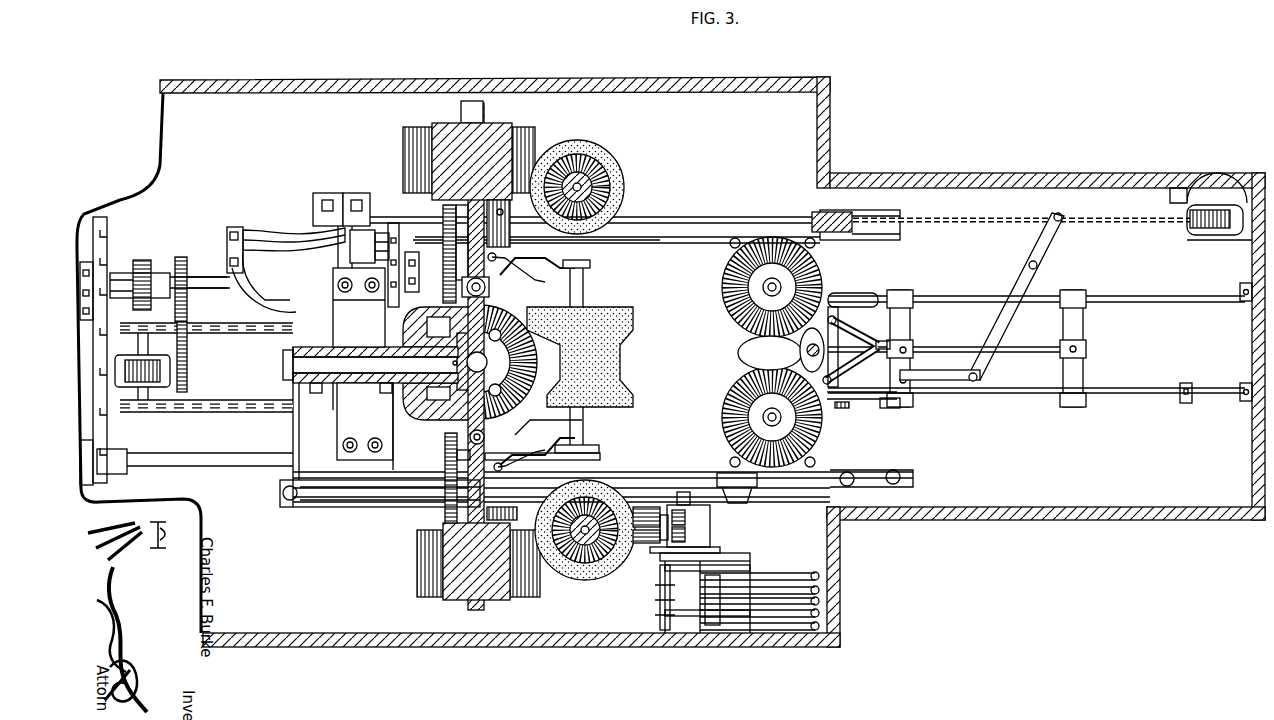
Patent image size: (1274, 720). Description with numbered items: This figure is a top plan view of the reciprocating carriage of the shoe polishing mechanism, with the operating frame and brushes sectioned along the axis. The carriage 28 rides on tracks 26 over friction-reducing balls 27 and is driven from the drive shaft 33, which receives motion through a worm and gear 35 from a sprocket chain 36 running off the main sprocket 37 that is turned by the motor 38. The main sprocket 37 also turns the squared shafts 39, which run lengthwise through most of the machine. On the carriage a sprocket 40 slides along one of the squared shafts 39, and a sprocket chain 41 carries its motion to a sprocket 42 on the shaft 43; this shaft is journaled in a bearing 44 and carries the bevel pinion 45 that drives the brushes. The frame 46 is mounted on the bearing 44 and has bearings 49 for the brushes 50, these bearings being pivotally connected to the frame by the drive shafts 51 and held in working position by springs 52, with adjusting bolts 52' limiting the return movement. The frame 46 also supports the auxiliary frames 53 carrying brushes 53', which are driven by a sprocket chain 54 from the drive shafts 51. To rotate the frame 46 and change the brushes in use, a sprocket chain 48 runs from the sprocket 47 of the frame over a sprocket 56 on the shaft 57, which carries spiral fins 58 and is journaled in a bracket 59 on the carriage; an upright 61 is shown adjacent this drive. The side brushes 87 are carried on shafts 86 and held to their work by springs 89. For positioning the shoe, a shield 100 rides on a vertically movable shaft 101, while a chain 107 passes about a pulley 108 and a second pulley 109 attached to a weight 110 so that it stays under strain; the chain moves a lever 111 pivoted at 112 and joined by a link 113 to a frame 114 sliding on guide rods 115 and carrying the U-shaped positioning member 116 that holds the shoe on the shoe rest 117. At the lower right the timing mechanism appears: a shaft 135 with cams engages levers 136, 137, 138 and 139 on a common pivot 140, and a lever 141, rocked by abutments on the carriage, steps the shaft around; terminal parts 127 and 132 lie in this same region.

The tracks 26 is at (700, 225).
The balls 27 is at (902, 478).
The carriage 28 is at (650, 238).
The drive shaft 33 is at (150, 415).
The gear 35 is at (128, 390).
The sprocket chain 36 is at (165, 268).
The main sprocket 37 is at (108, 243).
The motor 38 is at (232, 340).
The squared shafts 39 is at (208, 275).
The sprocket 40 is at (310, 282).
The sprocket chain 41 is at (338, 323).
The sprocket 42 is at (322, 393).
The shaft 43 is at (355, 353).
The bearing 44 is at (417, 293).
The bevel pinion 45 is at (492, 338).
The frame 46 is at (428, 412).
The sprocket 47 is at (385, 390).
The sprocket chain 48 is at (448, 262).
The bearings 49 is at (496, 257).
The brushes 50 is at (525, 128).
The drive shafts 51 is at (486, 287).
The springs 52 is at (556, 358).
The adjusting bolts 52' is at (497, 567).
The auxiliary frames 53 is at (587, 354).
The brushes 53' is at (598, 458).
The sprocket chain 54 is at (580, 438).
The sprocket 56 is at (388, 230).
The shaft 57 is at (256, 248).
The spiral fins 58 is at (292, 228).
The bracket 59 is at (215, 290).
The upright 61 is at (335, 225).
The shafts 86 is at (768, 238).
The side brushes 87 is at (747, 278).
The springs 89 is at (745, 330).
The shield 100 is at (898, 404).
The shaft 101 is at (853, 330).
The chain 107 is at (973, 223).
The pulley 108 is at (856, 217).
The second pulley 109 is at (1192, 232).
The weight 110 is at (1223, 195).
The lever 111 is at (1050, 244).
The pivot 112 is at (1038, 266).
The link 113 is at (970, 384).
The frame 114 is at (907, 328).
The guide rods 115 is at (1173, 300).
The U-shaped positioning member 116 is at (850, 330).
The shoe rest 117 is at (781, 350).
The terminal 127 is at (822, 588).
The contact 132 is at (813, 570).
The shaft 135 is at (693, 625).
The lever 136 is at (782, 605).
The lever 137 is at (803, 612).
The lever 138 is at (757, 560).
The lever 139 is at (805, 586).
The common pivot 140 is at (730, 620).
The lever 141 is at (640, 560).